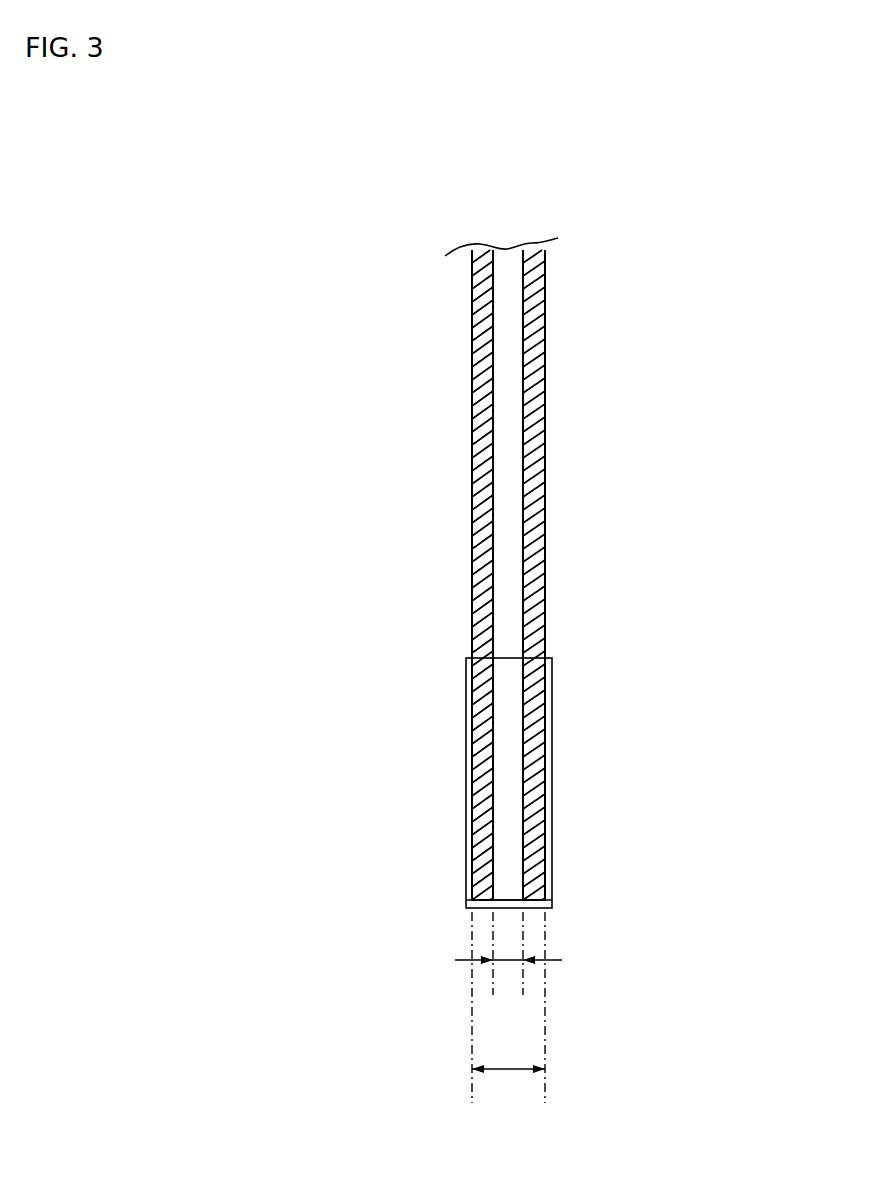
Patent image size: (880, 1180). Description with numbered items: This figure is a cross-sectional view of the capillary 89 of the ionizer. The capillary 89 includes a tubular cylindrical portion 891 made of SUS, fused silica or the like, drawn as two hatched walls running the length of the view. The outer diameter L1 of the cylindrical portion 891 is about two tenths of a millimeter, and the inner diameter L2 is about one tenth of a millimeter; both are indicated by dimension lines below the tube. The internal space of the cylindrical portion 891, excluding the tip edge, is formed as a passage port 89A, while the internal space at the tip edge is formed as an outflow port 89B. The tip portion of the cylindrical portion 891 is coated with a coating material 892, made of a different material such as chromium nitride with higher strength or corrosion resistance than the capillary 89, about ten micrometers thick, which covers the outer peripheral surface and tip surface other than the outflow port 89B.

The capillary 89 is at (532, 581).
The cylindrical portion 891 is at (547, 518).
The coating material 892 is at (553, 742).
The passage port 89A is at (508, 413).
The outflow port 89B is at (488, 891).
The outer diameter L1 is at (505, 1069).
The inner diameter L2 is at (505, 960).